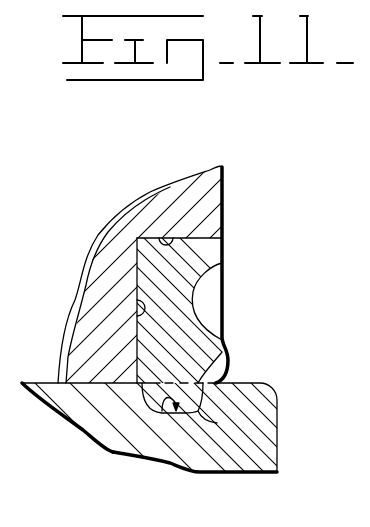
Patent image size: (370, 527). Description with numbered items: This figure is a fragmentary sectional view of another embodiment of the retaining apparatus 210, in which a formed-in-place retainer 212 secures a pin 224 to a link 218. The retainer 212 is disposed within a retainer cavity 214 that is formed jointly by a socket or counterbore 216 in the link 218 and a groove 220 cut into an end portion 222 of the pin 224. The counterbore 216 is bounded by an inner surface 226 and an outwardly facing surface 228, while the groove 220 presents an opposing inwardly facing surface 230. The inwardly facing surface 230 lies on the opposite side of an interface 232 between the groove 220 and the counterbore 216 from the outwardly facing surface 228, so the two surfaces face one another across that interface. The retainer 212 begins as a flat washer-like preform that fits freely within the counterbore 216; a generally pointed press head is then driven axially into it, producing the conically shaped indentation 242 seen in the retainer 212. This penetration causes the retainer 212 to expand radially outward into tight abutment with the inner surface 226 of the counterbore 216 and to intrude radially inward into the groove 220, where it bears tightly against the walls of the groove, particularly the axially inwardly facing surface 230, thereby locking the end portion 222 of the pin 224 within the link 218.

The retaining apparatus 210 is at (93, 222).
The link 218 is at (148, 192).
The formed-in-place retainer 212 is at (197, 317).
The retainer cavity 214 is at (137, 342).
The socket or counterbore 216 is at (199, 242).
The inner surface 226 is at (184, 239).
The conically shaped indentation 242 is at (193, 292).
The outwardly facing surface 228 is at (137, 309).
The interface 232 is at (228, 362).
The inwardly facing surface 230 is at (185, 350).
The groove 220 is at (162, 413).
The pin 224 is at (92, 435).
The end portion 222 is at (162, 452).